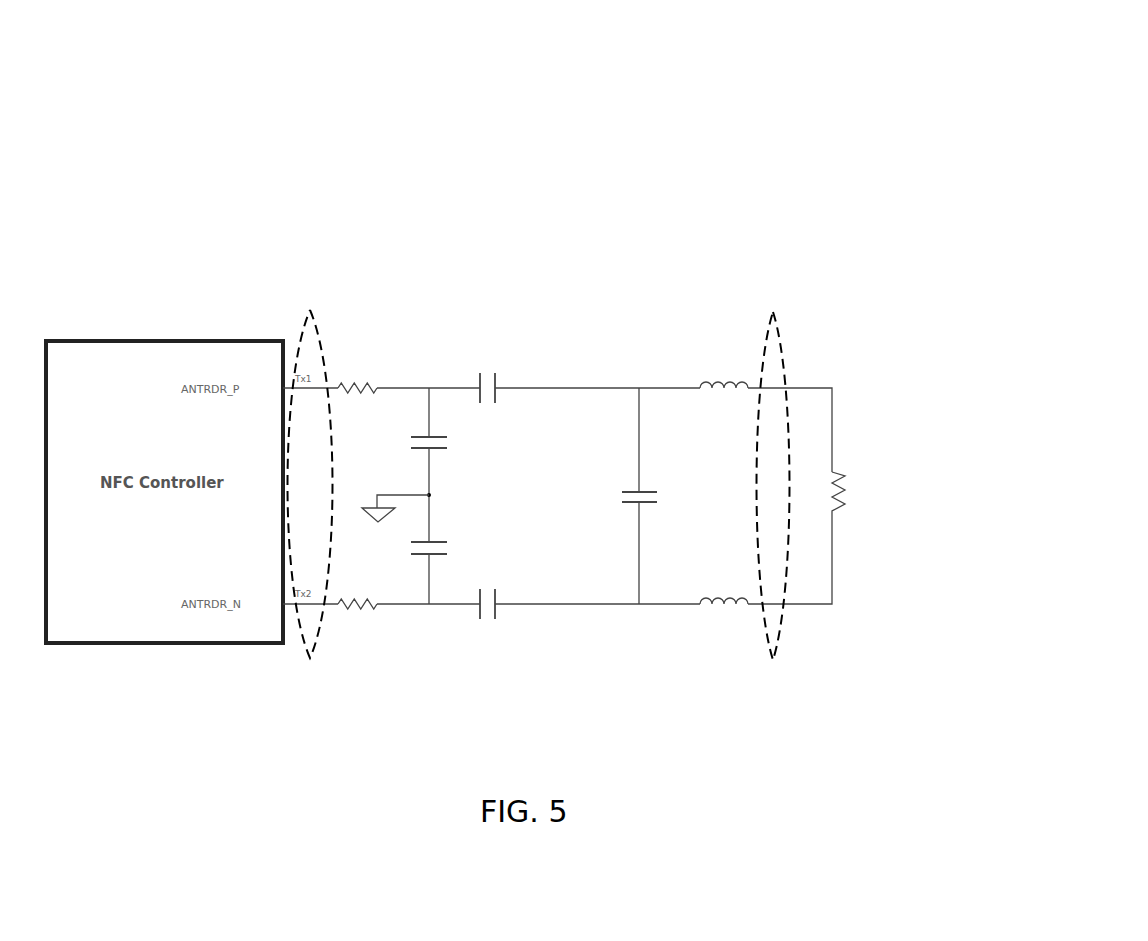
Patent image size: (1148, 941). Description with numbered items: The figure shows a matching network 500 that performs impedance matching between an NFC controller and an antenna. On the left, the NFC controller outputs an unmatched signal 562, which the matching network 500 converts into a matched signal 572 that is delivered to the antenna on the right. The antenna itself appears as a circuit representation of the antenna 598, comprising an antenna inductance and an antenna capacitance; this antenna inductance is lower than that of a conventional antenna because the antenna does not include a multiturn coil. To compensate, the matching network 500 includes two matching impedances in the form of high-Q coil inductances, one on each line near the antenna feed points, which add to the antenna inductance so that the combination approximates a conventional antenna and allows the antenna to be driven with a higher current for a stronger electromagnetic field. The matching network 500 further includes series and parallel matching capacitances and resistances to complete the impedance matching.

The matching network 500 is at (718, 86).
The unmatched signal 562 is at (310, 310).
The matched signal 572 is at (773, 312).
The circuit representation of the antenna 598 is at (798, 690).